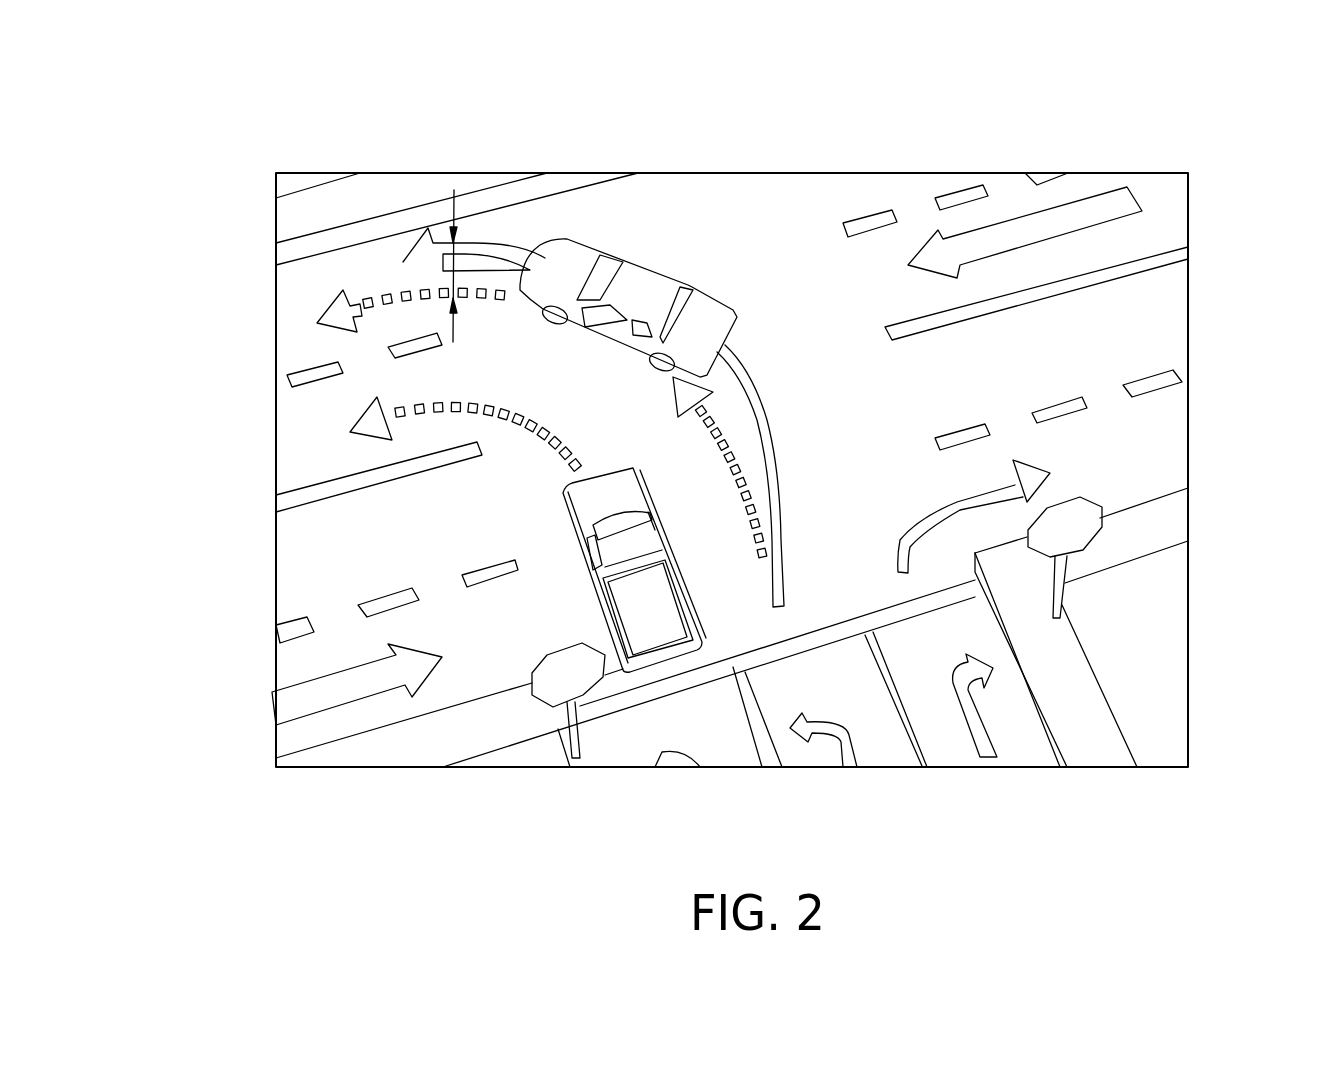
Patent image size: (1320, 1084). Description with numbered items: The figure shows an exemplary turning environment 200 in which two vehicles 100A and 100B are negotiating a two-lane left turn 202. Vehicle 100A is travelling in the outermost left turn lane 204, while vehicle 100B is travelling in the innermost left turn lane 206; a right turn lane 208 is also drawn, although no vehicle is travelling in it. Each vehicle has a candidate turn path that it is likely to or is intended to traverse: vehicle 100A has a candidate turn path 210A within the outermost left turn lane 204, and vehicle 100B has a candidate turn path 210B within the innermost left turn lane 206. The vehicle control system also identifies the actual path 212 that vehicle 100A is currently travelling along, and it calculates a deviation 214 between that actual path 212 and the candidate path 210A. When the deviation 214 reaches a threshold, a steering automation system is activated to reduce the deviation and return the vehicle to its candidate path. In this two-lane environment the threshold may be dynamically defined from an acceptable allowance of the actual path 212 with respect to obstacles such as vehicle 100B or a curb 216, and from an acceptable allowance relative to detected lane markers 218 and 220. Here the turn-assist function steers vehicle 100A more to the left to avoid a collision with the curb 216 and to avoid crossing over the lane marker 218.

The turning environment 200 is at (1072, 152).
The two-lane left turn 202 is at (239, 507).
The outermost left turn lane 204 is at (655, 254).
The innermost left turn lane 206 is at (531, 585).
The right turn lane 208 is at (1145, 457).
The candidate turn path 210A is at (388, 298).
The candidate turn path 210B is at (438, 412).
The actual path 212 is at (513, 243).
The deviation 214 is at (455, 190).
The curb 216 is at (314, 198).
The lane marker 218 is at (290, 246).
The lane marker 220 is at (300, 373).
The vehicle 100A is at (565, 255).
The vehicle 100B is at (642, 632).